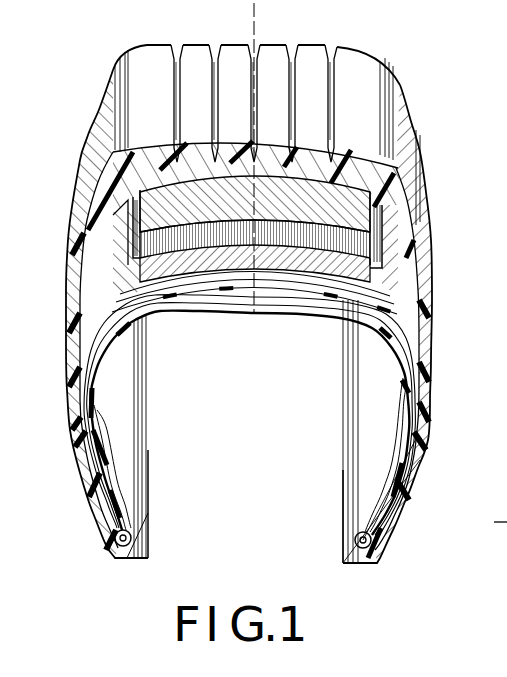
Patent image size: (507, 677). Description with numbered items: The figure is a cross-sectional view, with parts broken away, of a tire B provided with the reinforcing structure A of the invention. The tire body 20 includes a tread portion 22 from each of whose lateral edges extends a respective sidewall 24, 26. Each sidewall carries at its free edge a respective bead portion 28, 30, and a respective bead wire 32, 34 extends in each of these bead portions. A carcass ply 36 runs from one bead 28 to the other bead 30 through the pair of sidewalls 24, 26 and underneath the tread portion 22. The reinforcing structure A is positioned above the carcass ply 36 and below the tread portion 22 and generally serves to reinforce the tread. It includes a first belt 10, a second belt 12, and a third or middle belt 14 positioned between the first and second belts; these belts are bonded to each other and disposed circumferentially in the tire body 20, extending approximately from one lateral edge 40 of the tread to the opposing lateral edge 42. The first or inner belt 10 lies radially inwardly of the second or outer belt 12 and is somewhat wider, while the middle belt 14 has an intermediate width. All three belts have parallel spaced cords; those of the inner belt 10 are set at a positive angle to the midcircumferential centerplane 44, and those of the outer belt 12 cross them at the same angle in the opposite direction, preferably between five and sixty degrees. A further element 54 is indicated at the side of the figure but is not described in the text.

The first belt 10 is at (385, 266).
The second belt 12 is at (345, 200).
The third belt 14 is at (133, 212).
The tire body 20 is at (90, 102).
The tread portion 22 is at (312, 47).
The sidewall 24 is at (432, 316).
The sidewall 26 is at (68, 332).
The bead portion 28 is at (385, 540).
The bead portion 30 is at (90, 493).
The bead wire 32 is at (358, 538).
The bead wire 34 is at (131, 533).
The carcass ply 36 is at (350, 297).
The lateral edge 40 is at (397, 76).
The lateral edge 42 is at (112, 70).
The midcircumferential centerplane 44 is at (258, 30).
The rim 54 is at (488, 521).
The reinforcing structure A is at (400, 208).
The tire B is at (416, 97).